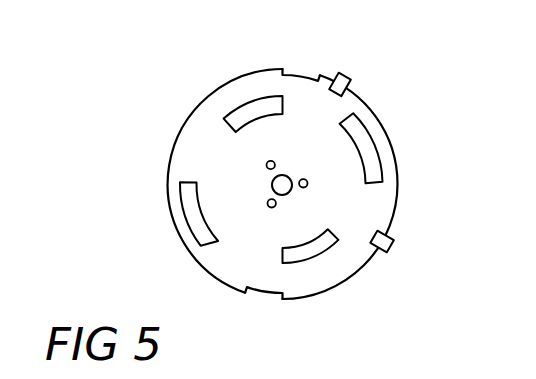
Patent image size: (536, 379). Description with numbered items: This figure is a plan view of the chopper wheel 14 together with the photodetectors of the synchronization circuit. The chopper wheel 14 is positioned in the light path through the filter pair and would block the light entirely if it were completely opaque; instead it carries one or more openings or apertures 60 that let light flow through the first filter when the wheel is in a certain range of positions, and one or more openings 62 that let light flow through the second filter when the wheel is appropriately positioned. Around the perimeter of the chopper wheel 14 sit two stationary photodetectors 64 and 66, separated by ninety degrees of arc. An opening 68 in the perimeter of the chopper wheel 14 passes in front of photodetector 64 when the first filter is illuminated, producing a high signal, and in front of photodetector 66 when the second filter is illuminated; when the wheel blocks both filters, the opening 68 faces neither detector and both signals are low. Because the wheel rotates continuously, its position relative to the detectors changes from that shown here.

The chopper wheel 14 is at (394, 151).
The openings or apertures 60 is at (238, 106).
The openings 62 is at (201, 247).
The photodetector 64 is at (345, 72).
The photodetector 66 is at (381, 252).
The opening 68 is at (290, 68).